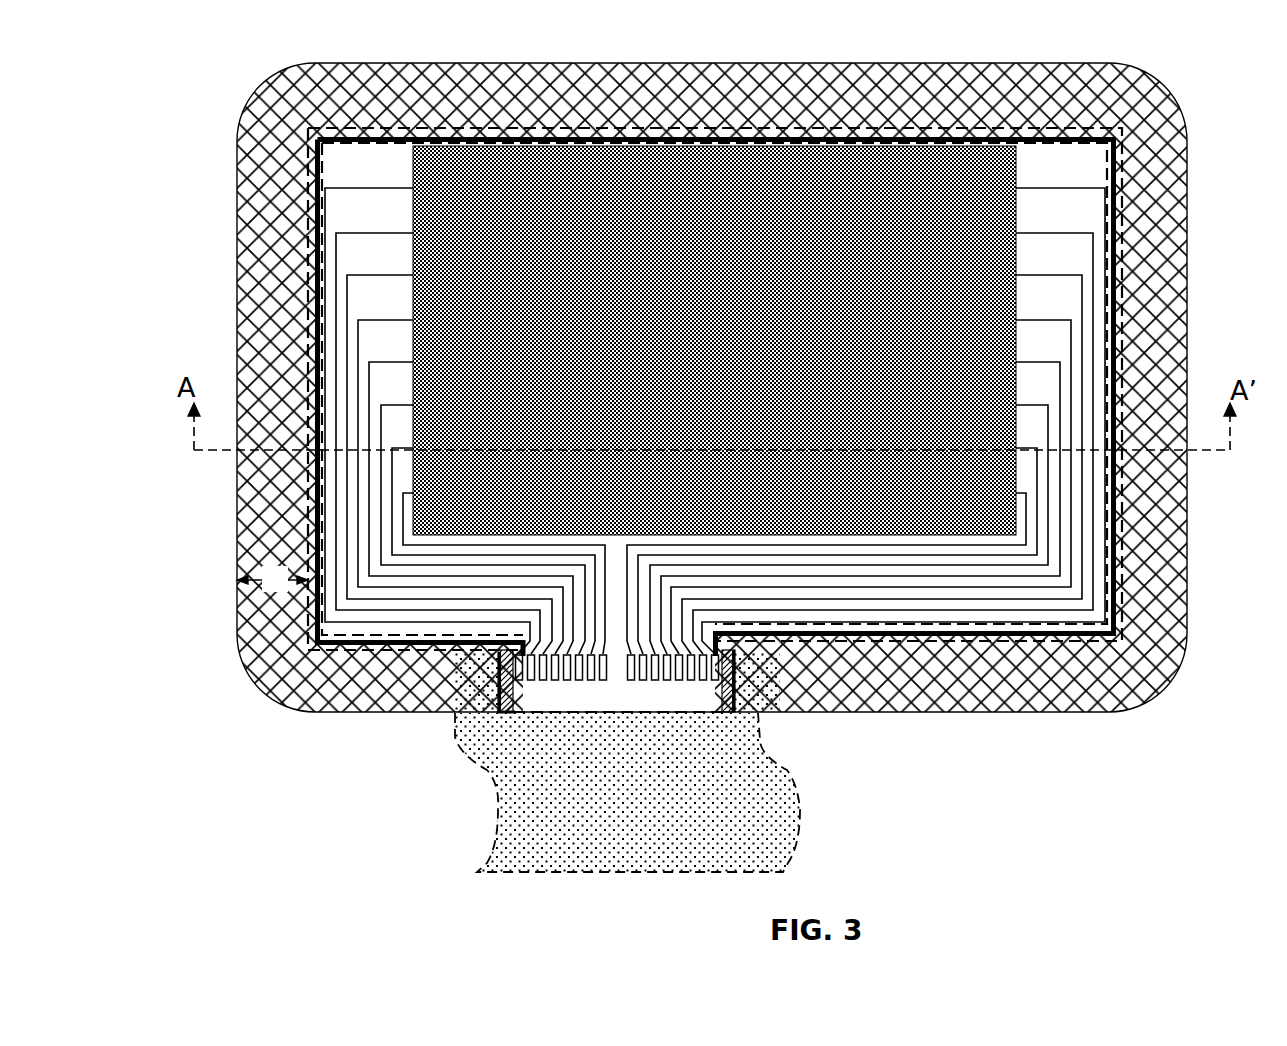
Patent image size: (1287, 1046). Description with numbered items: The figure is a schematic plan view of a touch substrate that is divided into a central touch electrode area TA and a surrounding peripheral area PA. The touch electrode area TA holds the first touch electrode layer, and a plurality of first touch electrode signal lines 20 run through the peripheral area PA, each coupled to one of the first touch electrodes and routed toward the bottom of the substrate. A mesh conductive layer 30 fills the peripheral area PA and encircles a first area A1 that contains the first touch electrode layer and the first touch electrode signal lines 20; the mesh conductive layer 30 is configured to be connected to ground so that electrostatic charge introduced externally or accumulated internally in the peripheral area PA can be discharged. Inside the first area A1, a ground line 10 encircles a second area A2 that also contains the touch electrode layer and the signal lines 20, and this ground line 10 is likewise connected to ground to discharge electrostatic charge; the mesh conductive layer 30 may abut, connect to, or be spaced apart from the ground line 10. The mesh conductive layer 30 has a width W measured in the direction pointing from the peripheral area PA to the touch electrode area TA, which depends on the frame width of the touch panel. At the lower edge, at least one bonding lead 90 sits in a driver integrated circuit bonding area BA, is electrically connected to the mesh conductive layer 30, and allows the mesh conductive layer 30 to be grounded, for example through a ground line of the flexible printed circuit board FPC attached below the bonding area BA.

The ground line 10 is at (1120, 360).
The first touch electrode signal lines 20 is at (1062, 188).
The mesh conductive layer 30 is at (1155, 550).
The bonding lead 90 is at (497, 712).
The first area A1 is at (308, 156).
The second area A2 is at (337, 148).
The peripheral area PA is at (712, 387).
The touch electrode area TA is at (714, 340).
The driver integrated circuit bonding area BA is at (537, 713).
The flexible printed circuit board FPC is at (627, 792).
The width W is at (272, 581).